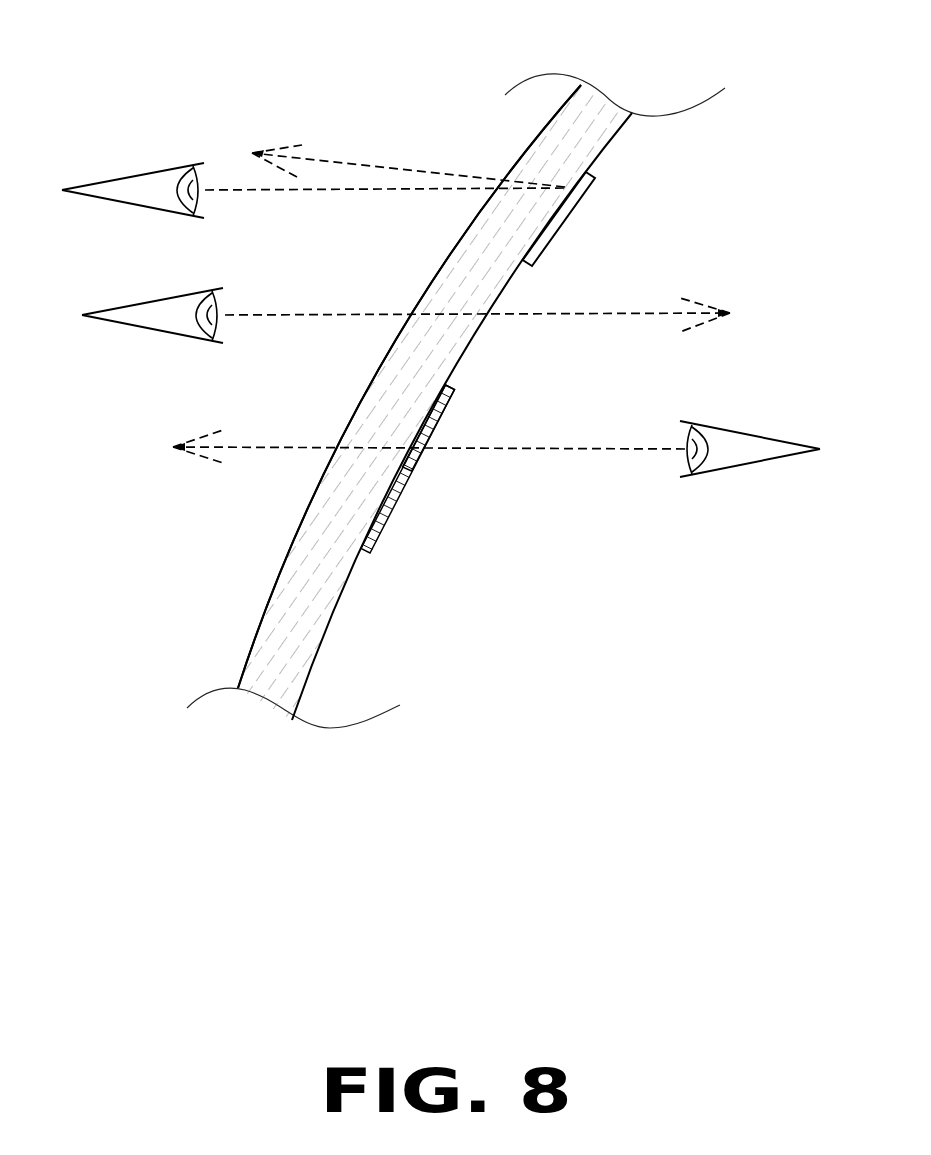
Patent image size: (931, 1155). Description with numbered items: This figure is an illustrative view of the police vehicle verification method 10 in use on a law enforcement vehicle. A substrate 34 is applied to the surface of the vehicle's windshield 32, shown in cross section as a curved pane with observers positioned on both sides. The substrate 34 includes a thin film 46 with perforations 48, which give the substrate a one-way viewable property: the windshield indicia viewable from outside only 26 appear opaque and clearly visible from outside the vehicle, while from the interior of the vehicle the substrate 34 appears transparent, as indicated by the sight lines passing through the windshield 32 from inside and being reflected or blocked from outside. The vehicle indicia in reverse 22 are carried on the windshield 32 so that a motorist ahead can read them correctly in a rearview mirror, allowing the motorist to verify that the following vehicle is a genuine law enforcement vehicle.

The police vehicle verification method 10 is at (513, 366).
The vehicle indicia in reverse 22 is at (553, 234).
The windshield indicia viewable from outside only 26 is at (432, 287).
The windshield 32 is at (327, 570).
The substrate 34 is at (273, 638).
The thin film 46 is at (390, 512).
The perforations 48 is at (433, 420).